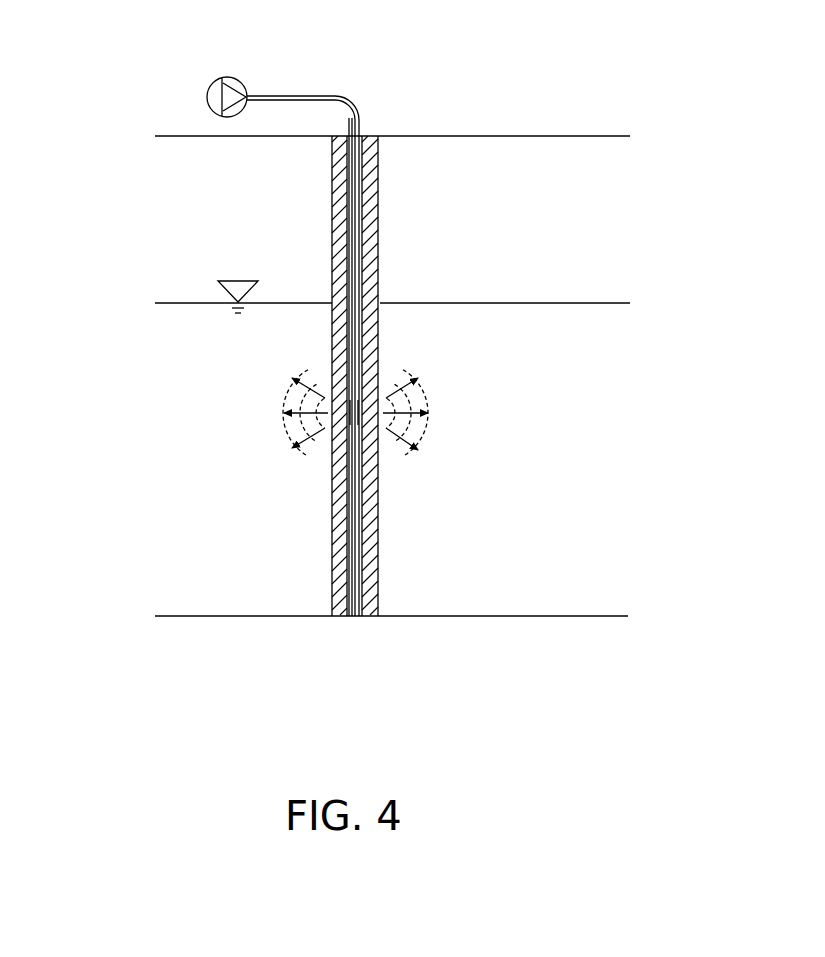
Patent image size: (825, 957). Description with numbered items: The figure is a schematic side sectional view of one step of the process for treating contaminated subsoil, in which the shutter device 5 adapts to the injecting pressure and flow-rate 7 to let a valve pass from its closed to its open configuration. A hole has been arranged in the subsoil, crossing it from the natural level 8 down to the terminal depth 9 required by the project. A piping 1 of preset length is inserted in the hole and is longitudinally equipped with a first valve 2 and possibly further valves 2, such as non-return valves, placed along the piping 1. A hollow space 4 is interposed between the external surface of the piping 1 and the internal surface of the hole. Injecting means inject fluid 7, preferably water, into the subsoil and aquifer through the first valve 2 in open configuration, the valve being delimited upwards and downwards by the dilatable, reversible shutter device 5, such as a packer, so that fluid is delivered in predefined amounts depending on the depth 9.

The piping 1 is at (355, 163).
The first valve 2 is at (367, 407).
The hollow space 4 is at (379, 185).
The shutter device 5 is at (355, 395).
The injecting 7 is at (277, 392).
The natural level 8 is at (620, 136).
The terminal depth 9 is at (610, 616).